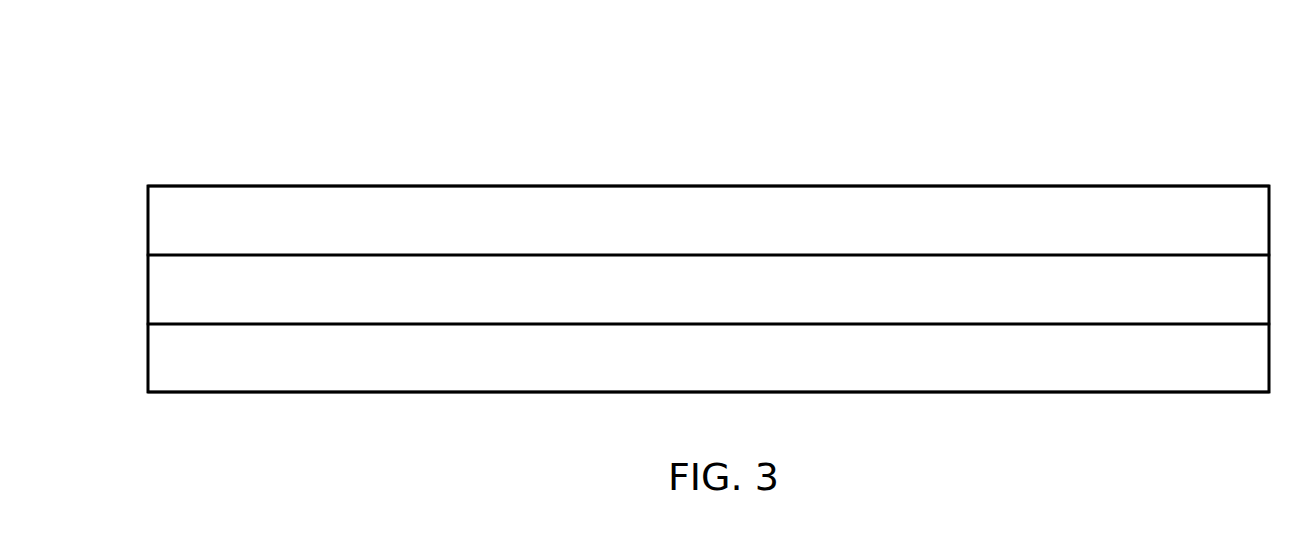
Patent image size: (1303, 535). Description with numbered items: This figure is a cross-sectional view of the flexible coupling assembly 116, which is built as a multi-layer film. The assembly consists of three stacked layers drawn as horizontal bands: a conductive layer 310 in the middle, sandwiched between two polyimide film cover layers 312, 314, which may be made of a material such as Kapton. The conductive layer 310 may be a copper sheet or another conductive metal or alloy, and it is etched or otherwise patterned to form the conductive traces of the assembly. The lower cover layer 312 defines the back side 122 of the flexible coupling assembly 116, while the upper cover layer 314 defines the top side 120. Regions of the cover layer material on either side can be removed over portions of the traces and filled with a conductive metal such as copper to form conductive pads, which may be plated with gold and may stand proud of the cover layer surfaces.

The flexible coupling assembly 116 is at (513, 90).
The top side 120 is at (1081, 185).
The back side 122 is at (1090, 393).
The conductive layer 310 is at (148, 290).
The polyimide film cover layer 312 is at (148, 361).
The polyimide film cover layer 314 is at (148, 218).